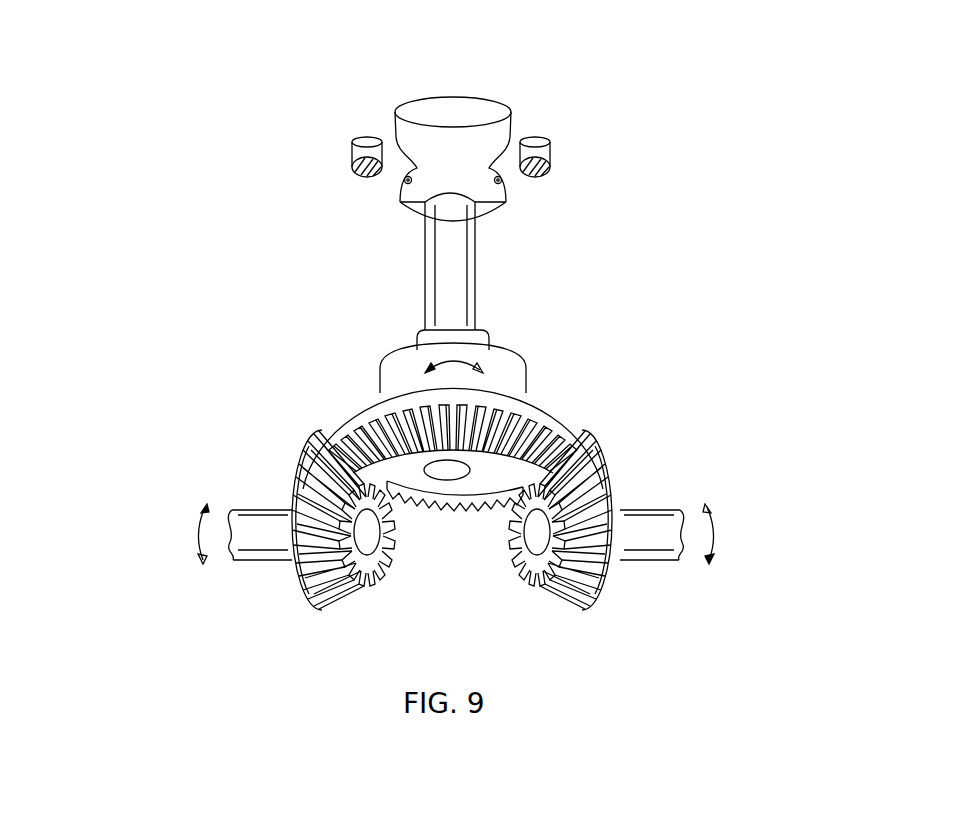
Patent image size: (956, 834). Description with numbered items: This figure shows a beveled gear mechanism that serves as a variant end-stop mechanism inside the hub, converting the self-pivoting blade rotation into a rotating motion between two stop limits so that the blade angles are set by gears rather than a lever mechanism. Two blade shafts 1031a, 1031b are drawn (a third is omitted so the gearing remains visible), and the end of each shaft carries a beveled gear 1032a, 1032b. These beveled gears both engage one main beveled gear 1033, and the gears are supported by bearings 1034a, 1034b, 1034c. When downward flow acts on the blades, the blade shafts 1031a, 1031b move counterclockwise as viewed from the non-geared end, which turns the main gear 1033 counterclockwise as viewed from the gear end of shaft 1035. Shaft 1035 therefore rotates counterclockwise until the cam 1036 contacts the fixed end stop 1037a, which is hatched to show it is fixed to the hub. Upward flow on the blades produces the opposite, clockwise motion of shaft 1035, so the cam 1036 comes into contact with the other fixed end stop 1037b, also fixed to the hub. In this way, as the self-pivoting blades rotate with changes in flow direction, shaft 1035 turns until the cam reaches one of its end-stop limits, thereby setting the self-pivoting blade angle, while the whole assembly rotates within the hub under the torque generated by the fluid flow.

The blade shaft 1031a is at (627, 537).
The blade shaft 1031b is at (285, 537).
The beveled gear 1032a is at (537, 472).
The beveled gear 1032b is at (345, 472).
The main beveled gear 1033 is at (450, 380).
The bearing 1034a is at (607, 570).
The bearing 1034b is at (297, 570).
The bearing 1034c is at (485, 343).
The shaft 1035 is at (448, 275).
The cam 1036 is at (425, 143).
The fixed end stop 1037a is at (362, 147).
The fixed end stop 1037b is at (535, 147).